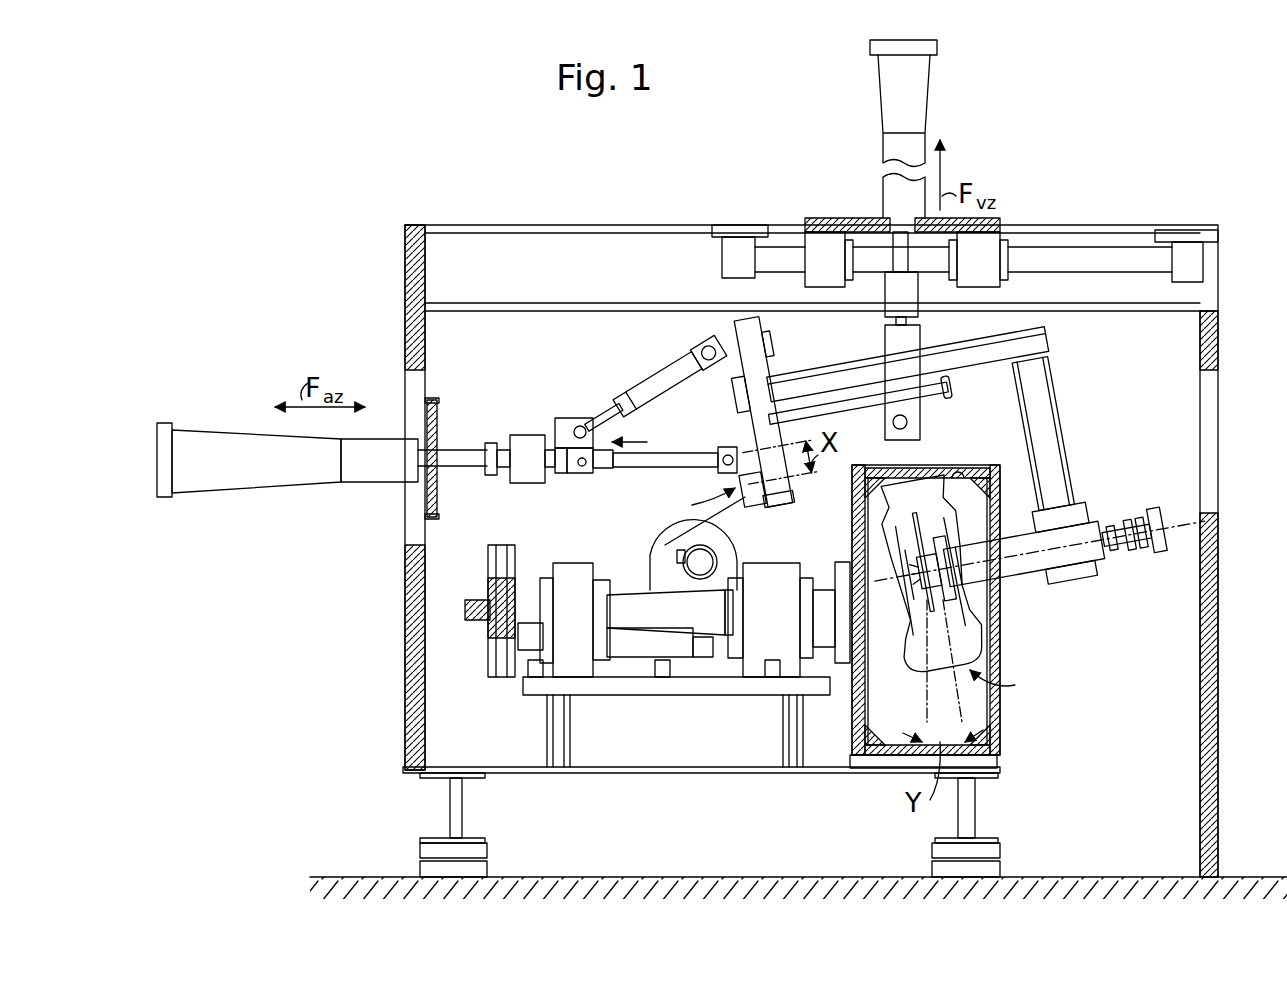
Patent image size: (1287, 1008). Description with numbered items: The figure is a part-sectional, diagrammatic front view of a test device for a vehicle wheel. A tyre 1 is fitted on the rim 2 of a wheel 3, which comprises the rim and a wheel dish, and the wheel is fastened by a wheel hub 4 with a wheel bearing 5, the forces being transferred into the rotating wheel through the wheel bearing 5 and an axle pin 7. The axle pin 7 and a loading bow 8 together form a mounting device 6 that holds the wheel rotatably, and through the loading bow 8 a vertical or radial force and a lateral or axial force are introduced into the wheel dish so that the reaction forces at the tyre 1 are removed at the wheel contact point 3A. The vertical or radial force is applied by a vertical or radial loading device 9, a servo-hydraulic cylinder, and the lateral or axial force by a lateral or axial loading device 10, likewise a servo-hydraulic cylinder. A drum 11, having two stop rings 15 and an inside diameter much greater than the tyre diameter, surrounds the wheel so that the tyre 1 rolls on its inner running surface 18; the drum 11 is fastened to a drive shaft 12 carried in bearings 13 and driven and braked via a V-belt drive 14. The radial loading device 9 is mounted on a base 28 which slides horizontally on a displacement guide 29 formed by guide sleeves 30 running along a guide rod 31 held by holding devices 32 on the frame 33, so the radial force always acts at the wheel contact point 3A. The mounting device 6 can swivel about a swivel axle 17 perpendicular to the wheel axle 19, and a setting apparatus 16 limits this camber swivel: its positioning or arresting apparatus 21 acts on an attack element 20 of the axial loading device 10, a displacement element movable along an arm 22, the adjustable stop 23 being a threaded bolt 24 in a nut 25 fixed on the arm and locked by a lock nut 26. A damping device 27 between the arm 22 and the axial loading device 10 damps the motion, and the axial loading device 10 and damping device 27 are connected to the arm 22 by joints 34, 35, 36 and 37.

The tyre 1 is at (976, 648).
The rim 2 is at (940, 627).
The wheel 3 is at (1003, 680).
The wheel contact point 3A is at (905, 468).
The wheel hub 4 is at (950, 583).
The wheel bearing 5 is at (933, 540).
The mounting device 6 is at (1080, 520).
The axle pin 7 is at (1072, 560).
The loading bow 8 is at (1040, 340).
The vertical or radial loading device 9 is at (912, 86).
The lateral or axial loading device 10 is at (242, 470).
The drum 11 is at (887, 762).
The drive shaft 12 is at (826, 630).
The bearings 13 is at (585, 665).
The V-belt drive 14 is at (500, 680).
The stop rings 15 is at (992, 735).
The setting apparatus 16 is at (703, 483).
The swivel axle 17 is at (907, 422).
The inner running surface 18 is at (958, 476).
The wheel axle 19 is at (1170, 527).
The attack element 20 is at (735, 447).
The positioning or arresting apparatus 21 is at (701, 503).
The arm 22 is at (770, 392).
The adjustable stop 23 is at (785, 500).
The threaded bolt 24 is at (716, 458).
The nut 25 is at (662, 535).
The lock nut 26 is at (755, 497).
The damping device 27 is at (660, 385).
The base 28 is at (915, 223).
The displacement guide 29 is at (838, 212).
The guide sleeves 30 is at (828, 277).
The guide rod 31 is at (1090, 255).
The holding devices 32 is at (738, 258).
The frame 33 is at (1218, 335).
The joint 34 is at (582, 475).
The joint 35 is at (805, 414).
The joint 36 is at (580, 425).
The joint 37 is at (706, 350).